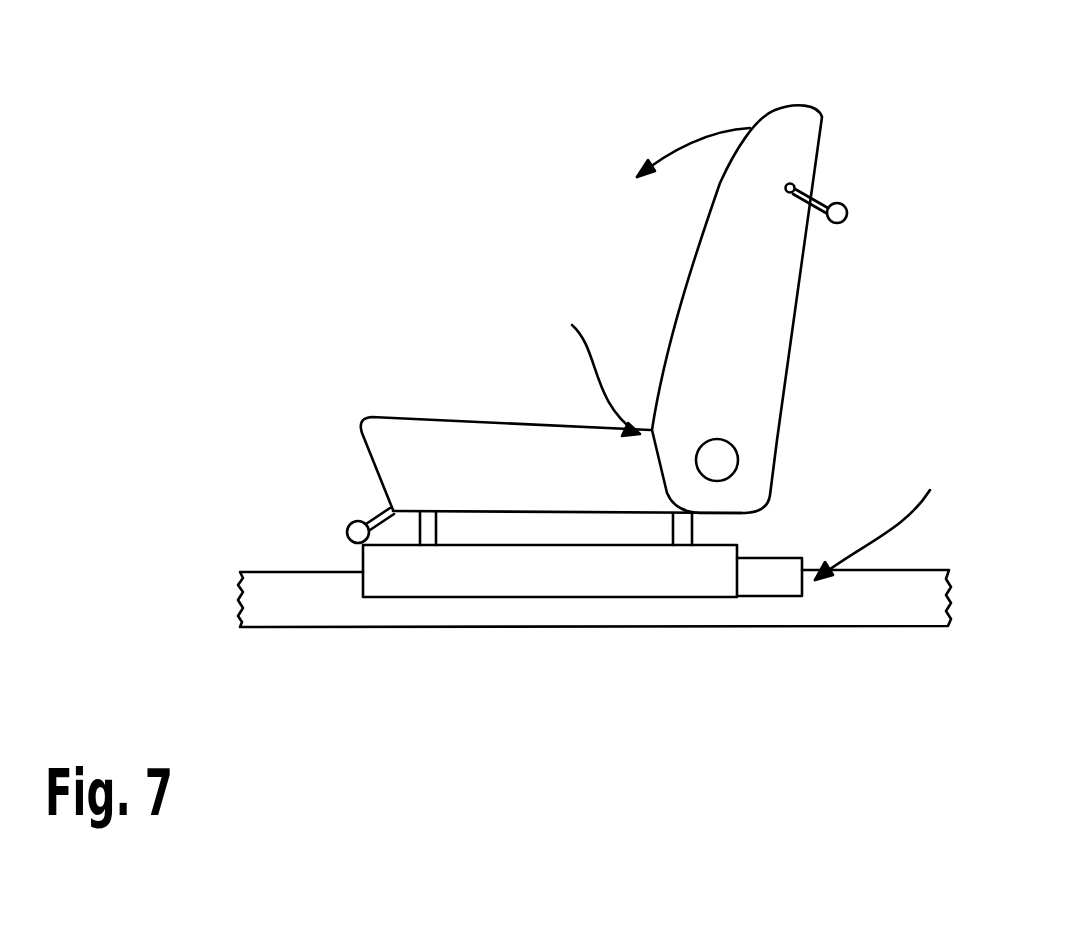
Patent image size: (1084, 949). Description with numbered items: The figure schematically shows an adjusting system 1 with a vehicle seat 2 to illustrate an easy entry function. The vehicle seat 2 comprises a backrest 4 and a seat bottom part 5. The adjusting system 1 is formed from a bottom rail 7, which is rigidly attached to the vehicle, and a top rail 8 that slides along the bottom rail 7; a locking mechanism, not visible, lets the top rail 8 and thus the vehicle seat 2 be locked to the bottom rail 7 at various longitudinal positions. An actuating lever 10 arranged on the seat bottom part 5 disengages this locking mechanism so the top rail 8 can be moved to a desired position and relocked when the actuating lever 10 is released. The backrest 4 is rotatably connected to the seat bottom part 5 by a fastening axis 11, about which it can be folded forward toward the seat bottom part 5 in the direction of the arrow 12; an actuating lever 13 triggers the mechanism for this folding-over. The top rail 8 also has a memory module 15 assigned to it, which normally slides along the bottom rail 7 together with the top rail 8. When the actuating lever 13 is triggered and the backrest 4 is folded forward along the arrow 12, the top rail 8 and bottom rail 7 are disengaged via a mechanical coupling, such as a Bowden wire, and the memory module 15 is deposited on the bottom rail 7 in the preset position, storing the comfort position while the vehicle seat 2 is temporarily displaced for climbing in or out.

The adjusting system 1 is at (879, 515).
The vehicle seat 2 is at (600, 348).
The backrest 4 is at (775, 340).
The seat bottom part 5 is at (402, 438).
The bottom rail 7 is at (272, 583).
The top rail 8 is at (650, 578).
The actuating lever 10 is at (352, 527).
The fastening axis 11 is at (717, 460).
The arrow 12 is at (690, 133).
The actuating lever 13 is at (843, 200).
The memory module 15 is at (772, 578).